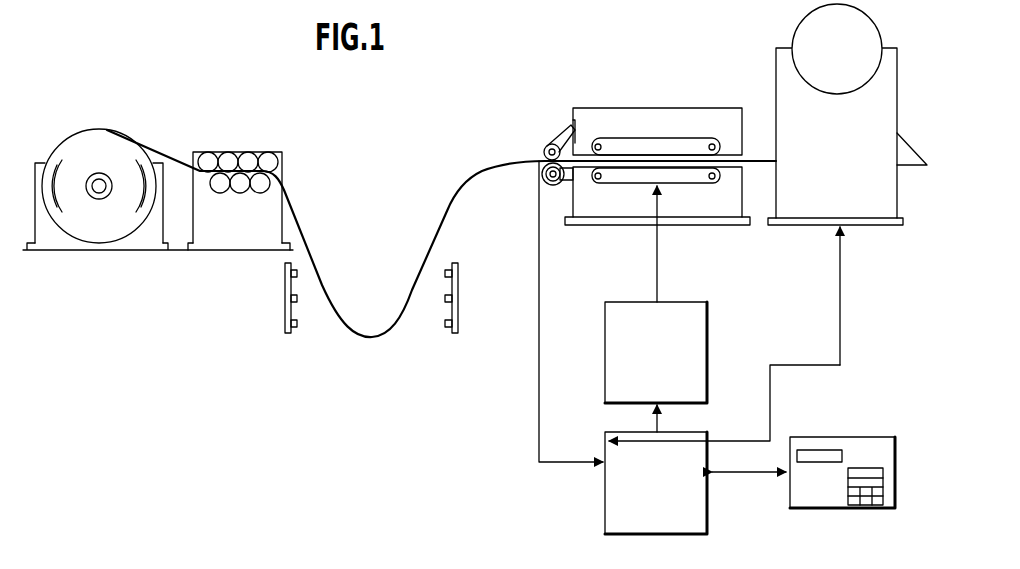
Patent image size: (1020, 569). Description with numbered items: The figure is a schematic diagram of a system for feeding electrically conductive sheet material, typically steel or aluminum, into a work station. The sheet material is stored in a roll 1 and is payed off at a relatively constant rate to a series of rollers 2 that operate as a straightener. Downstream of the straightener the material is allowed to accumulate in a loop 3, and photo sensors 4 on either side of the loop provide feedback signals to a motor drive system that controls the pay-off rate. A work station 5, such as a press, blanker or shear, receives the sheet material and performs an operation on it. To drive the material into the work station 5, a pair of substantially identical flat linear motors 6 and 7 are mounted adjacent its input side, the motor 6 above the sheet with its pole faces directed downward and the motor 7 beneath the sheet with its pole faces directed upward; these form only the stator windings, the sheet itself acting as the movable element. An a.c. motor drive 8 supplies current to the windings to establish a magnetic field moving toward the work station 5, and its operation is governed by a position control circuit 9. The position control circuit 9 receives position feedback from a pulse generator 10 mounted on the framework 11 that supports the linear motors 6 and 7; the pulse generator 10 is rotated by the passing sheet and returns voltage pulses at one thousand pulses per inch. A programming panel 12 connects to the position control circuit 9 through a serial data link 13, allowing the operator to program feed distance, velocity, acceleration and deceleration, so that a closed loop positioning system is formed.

The roll 1 is at (100, 128).
The series of rollers 2 is at (223, 149).
The loop 3 is at (364, 340).
The photo sensors 4 is at (282, 310).
The work station 5 is at (772, 69).
The flat linear motor 6 is at (660, 147).
The flat linear motor 7 is at (698, 177).
The a.c. motor drive 8 is at (710, 332).
The position control circuit 9 is at (605, 517).
The pulse generator 10 is at (547, 153).
The framework 11 is at (612, 232).
The programming panel 12 is at (858, 437).
The serial data link 13 is at (750, 477).